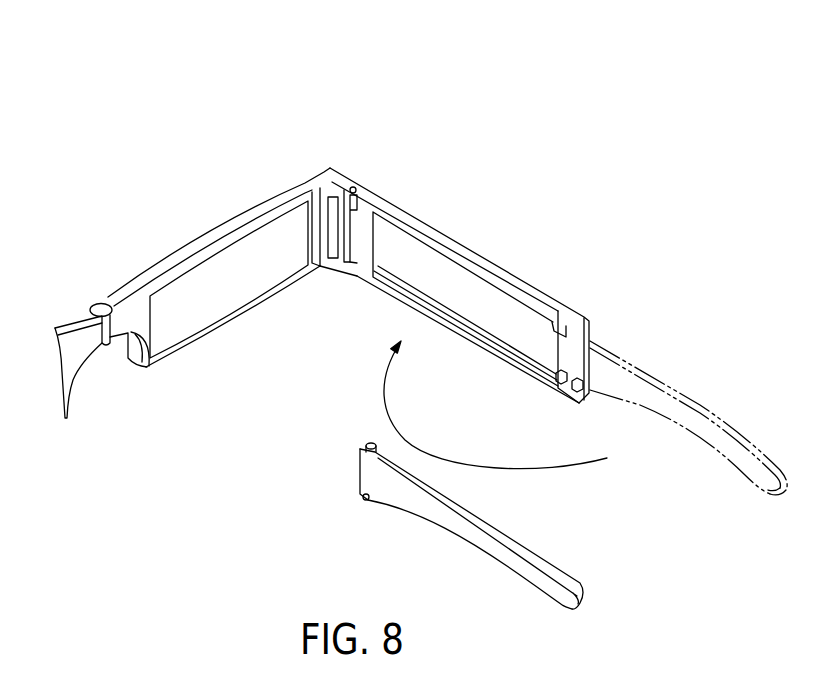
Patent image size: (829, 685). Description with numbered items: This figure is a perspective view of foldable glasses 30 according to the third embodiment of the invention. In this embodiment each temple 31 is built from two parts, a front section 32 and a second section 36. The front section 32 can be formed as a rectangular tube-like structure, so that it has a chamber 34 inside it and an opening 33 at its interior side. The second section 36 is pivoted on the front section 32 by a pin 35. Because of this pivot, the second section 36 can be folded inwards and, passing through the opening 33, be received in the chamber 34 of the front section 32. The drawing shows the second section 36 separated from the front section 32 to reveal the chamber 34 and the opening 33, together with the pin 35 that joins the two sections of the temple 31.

The foldable glasses 30 is at (543, 114).
The temple 31 is at (712, 250).
The front section 32 is at (467, 285).
The opening 33 is at (403, 293).
The chamber 34 is at (443, 262).
The pin 35 is at (363, 498).
The second section 36 is at (617, 350).